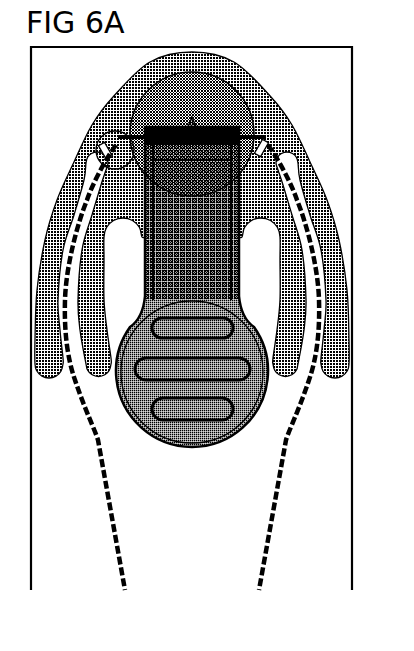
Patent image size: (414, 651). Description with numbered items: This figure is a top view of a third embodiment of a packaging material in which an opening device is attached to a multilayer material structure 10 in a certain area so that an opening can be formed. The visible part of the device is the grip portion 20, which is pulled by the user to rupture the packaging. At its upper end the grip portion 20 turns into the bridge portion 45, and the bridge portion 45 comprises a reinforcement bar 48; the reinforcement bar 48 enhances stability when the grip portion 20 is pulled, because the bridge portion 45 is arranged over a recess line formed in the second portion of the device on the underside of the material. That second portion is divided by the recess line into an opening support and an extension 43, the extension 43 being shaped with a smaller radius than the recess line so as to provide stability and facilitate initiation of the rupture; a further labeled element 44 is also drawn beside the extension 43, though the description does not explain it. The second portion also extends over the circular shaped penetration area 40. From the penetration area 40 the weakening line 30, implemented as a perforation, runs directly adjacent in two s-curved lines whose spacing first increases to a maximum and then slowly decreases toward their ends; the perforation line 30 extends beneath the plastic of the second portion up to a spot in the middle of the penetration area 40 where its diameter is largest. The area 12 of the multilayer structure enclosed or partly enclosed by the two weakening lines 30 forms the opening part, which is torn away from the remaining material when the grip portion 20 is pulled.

The multilayer material structure 10 is at (324, 60).
The area of the multilayer structure 12 is at (212, 581).
The grip portion 20 is at (183, 432).
The weakening line 30 is at (112, 525).
The penetration area 40 is at (242, 107).
The extension 43 is at (110, 129).
The hinge 44 is at (110, 165).
The bridge portion 45 is at (134, 125).
The reinforcement bar 48 is at (190, 121).